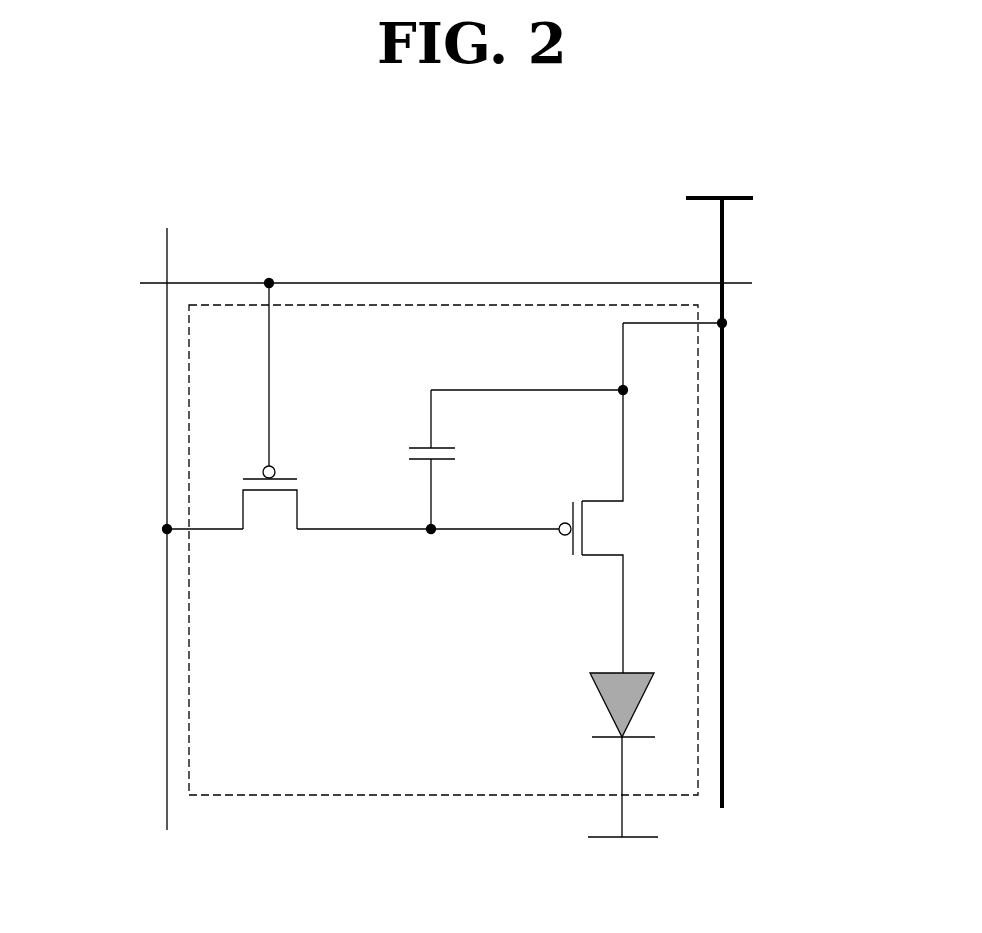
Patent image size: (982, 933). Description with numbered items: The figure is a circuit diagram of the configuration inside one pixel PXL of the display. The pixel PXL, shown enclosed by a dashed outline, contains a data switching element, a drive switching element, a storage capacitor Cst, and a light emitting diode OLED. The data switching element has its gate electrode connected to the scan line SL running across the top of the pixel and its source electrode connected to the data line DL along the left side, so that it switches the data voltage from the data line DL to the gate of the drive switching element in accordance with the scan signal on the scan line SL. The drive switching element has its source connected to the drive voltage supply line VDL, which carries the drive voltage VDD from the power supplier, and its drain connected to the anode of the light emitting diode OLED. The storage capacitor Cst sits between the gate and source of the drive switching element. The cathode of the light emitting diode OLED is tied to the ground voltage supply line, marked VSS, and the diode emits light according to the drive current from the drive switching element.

The pixel PXL is at (270, 796).
The data line DL is at (167, 384).
The scan line SL is at (393, 283).
The drive voltage supply line VDL is at (724, 428).
The drive voltage VDD is at (719, 178).
The common voltage VSS is at (623, 803).
The storage capacitor Cst is at (518, 460).
The light emitting diode OLED is at (584, 705).